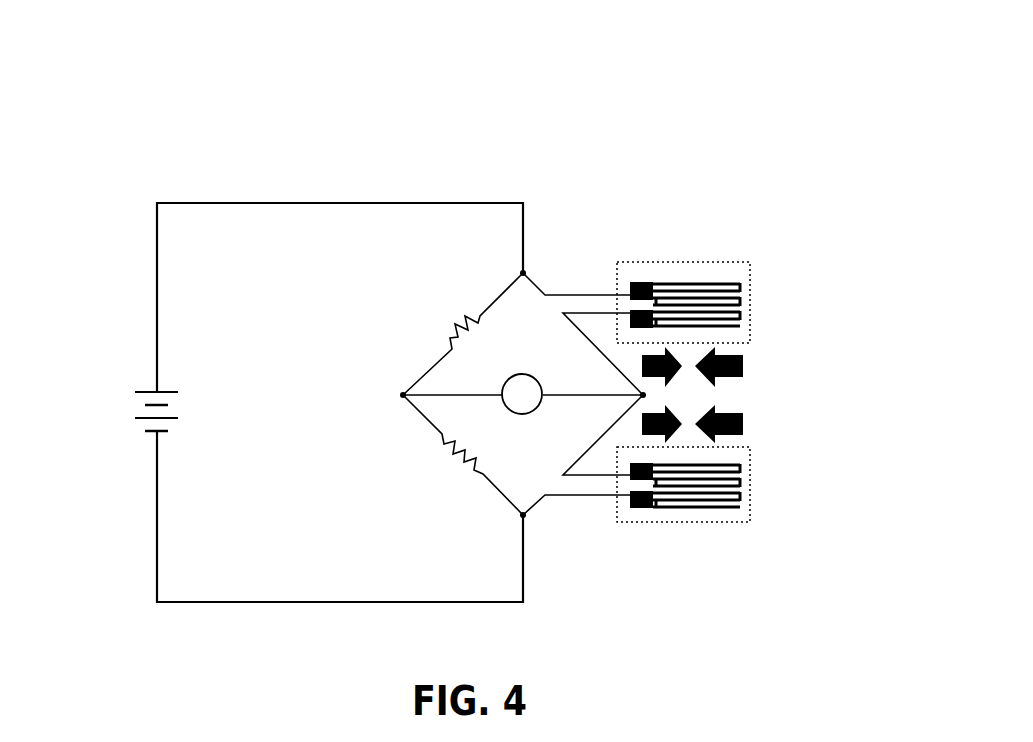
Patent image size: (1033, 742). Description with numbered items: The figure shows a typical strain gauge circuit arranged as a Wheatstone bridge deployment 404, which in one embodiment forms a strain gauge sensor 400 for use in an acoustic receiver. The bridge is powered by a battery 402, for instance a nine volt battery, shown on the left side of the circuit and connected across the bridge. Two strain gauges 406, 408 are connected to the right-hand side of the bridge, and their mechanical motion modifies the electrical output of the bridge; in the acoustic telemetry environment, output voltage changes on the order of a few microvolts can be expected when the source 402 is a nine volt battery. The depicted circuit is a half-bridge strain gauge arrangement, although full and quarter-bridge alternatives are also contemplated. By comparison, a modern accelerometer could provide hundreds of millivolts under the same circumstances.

The strain gauge sensor 400 is at (195, 130).
The battery 402 is at (132, 392).
The Wheatstone bridge deployment 404 is at (545, 268).
The strain gauge 406 is at (740, 312).
The strain gauge 408 is at (740, 483).